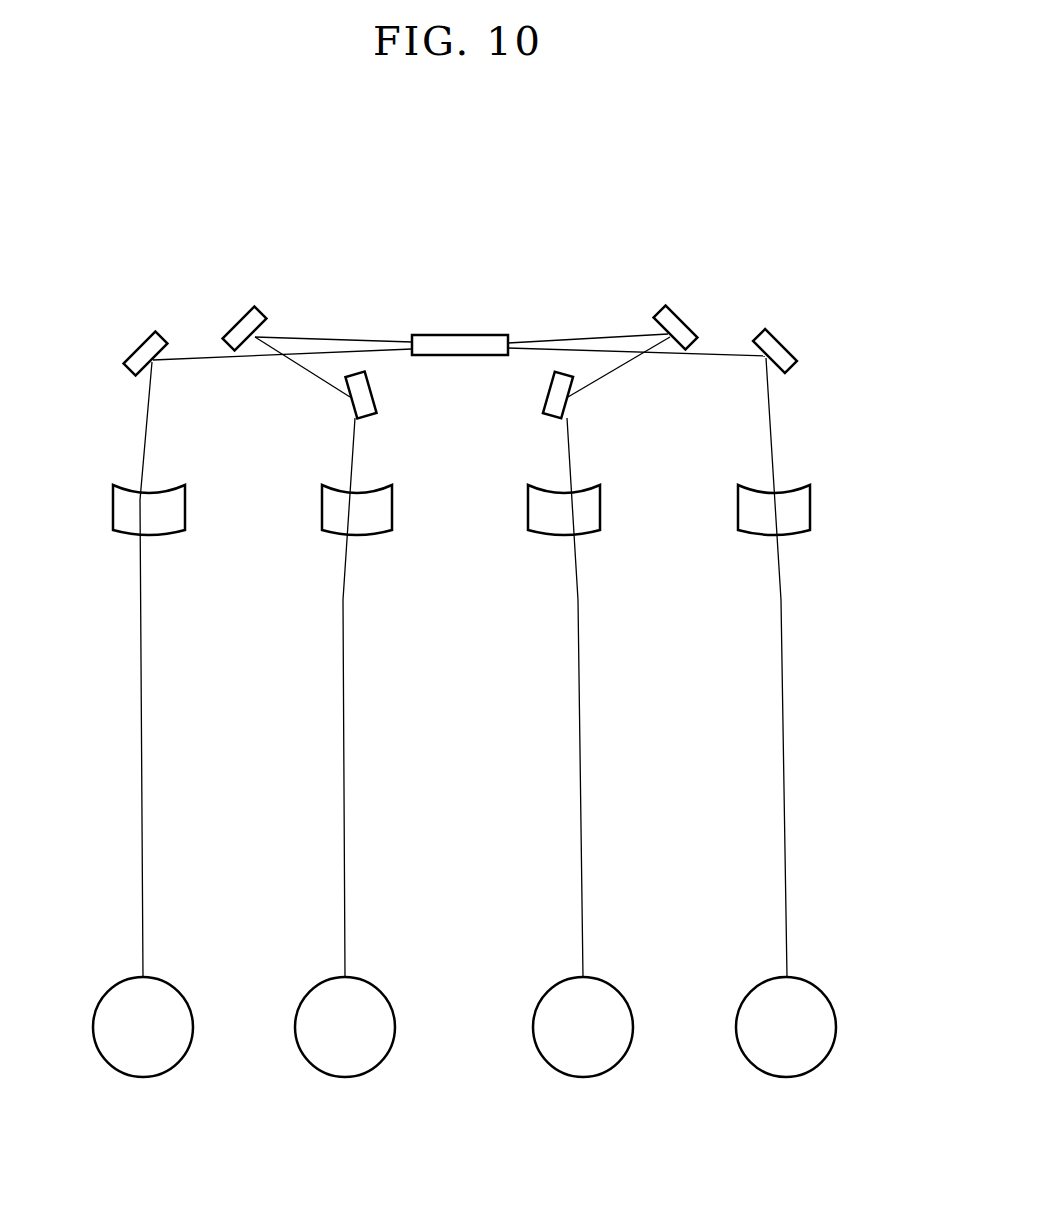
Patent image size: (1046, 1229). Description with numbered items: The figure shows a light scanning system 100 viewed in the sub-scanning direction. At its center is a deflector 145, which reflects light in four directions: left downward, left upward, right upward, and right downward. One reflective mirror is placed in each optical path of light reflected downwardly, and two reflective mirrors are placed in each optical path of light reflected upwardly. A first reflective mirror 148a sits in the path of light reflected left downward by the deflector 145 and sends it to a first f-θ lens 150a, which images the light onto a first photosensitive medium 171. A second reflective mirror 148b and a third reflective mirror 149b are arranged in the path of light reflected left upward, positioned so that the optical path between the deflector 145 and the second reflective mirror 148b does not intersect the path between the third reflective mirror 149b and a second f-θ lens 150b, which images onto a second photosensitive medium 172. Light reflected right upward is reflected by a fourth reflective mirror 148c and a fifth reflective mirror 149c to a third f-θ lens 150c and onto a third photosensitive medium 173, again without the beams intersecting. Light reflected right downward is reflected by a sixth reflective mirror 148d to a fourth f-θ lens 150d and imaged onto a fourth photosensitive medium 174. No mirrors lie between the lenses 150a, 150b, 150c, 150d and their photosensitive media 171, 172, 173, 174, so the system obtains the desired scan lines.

The light scanning system 100 is at (837, 222).
The deflector 145 is at (450, 335).
The first reflective mirror 148a is at (145, 338).
The second reflective mirror 148b is at (237, 318).
The fourth reflective mirror 148c is at (682, 310).
The sixth reflective mirror 148d is at (783, 340).
The third reflective mirror 149b is at (378, 395).
The fifth reflective mirror 149c is at (543, 405).
The first f-θ lens 150a is at (125, 523).
The second f-θ lens 150b is at (332, 523).
The third f-θ lens 150c is at (588, 522).
The fourth f-θ lens 150d is at (800, 520).
The first photosensitive medium 171 is at (143, 1077).
The second photosensitive medium 172 is at (345, 1077).
The third photosensitive medium 173 is at (583, 1077).
The fourth photosensitive medium 174 is at (787, 1077).